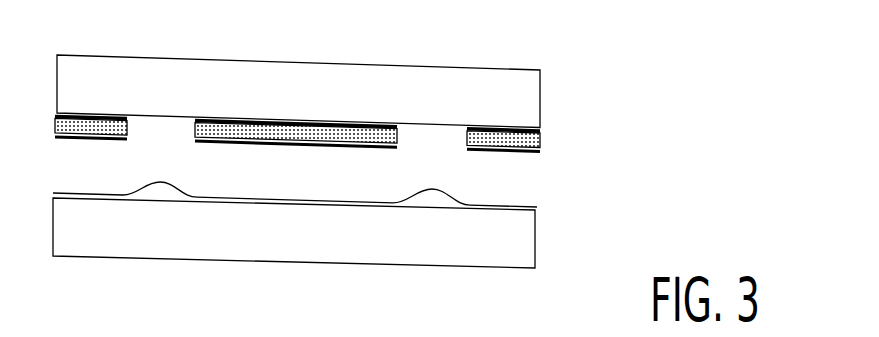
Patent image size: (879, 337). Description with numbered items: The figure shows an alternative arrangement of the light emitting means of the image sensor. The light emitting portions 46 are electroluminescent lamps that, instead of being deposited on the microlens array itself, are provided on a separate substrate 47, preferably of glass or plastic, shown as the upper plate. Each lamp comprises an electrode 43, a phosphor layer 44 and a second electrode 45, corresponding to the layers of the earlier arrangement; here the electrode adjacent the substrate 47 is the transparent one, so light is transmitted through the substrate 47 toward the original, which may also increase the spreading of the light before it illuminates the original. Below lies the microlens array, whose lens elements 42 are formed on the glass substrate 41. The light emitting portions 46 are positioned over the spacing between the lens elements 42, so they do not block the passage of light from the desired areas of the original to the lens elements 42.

The substrate 41 is at (497, 247).
The lens elements 42 is at (432, 197).
The first electrode 43 is at (63, 138).
The phosphor layer 44 is at (62, 124).
The second electrode 45 is at (263, 118).
The light emitting portions 46 is at (566, 146).
The substrate 47 is at (347, 85).